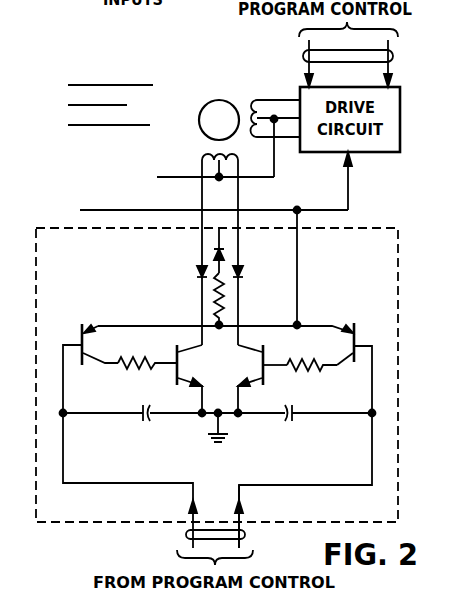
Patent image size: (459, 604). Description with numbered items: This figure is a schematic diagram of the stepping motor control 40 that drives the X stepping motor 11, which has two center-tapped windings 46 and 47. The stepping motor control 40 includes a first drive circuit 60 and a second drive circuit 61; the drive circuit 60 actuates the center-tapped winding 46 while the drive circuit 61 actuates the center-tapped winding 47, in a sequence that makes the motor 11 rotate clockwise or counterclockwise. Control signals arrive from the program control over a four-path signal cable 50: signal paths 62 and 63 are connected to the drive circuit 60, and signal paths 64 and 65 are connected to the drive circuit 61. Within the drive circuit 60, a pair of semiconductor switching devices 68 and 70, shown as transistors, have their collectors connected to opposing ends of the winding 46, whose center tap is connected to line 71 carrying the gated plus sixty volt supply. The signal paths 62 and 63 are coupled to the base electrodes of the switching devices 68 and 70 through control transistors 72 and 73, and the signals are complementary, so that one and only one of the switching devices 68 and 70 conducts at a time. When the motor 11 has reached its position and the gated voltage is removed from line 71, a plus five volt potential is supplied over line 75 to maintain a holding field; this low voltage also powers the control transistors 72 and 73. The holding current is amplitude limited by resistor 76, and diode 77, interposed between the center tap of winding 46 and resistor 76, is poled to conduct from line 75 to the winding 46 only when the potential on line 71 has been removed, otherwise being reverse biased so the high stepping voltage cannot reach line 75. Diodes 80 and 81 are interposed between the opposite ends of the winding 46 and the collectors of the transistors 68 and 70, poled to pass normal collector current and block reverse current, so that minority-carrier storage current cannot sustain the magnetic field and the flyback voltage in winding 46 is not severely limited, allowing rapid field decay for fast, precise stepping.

The stepping motor 11 is at (218, 100).
The stepping motor control 40 is at (100, 143).
The center-tapped winding 46 is at (203, 153).
The center-tapped winding 47 is at (253, 104).
The signal path cable 50 is at (393, 55).
The drive circuit 60 is at (53, 522).
The drive circuit 61 is at (388, 153).
The signal path 62 is at (191, 499).
The signal path 63 is at (241, 490).
The signal path 64 is at (305, 68).
The signal path 65 is at (391, 72).
The semiconductor switching device 68 is at (181, 372).
The semiconductor switching device 70 is at (261, 366).
The line 71 is at (185, 179).
The control transistor 72 is at (85, 352).
The control transistor 73 is at (352, 353).
The line 75 is at (148, 209).
The resistor 76 is at (224, 300).
The diode 77 is at (224, 246).
The diode 80 is at (196, 272).
The diode 81 is at (244, 272).